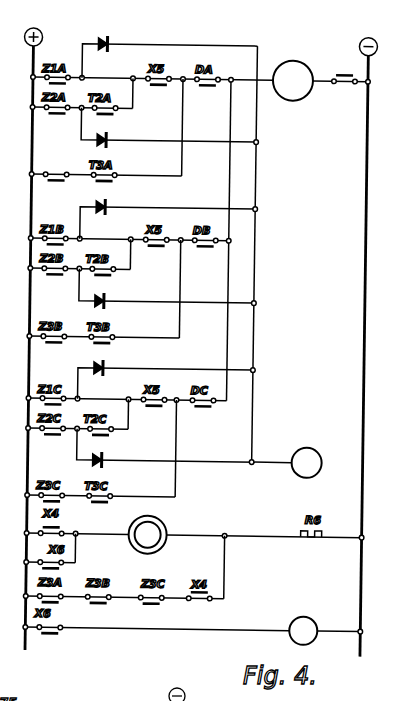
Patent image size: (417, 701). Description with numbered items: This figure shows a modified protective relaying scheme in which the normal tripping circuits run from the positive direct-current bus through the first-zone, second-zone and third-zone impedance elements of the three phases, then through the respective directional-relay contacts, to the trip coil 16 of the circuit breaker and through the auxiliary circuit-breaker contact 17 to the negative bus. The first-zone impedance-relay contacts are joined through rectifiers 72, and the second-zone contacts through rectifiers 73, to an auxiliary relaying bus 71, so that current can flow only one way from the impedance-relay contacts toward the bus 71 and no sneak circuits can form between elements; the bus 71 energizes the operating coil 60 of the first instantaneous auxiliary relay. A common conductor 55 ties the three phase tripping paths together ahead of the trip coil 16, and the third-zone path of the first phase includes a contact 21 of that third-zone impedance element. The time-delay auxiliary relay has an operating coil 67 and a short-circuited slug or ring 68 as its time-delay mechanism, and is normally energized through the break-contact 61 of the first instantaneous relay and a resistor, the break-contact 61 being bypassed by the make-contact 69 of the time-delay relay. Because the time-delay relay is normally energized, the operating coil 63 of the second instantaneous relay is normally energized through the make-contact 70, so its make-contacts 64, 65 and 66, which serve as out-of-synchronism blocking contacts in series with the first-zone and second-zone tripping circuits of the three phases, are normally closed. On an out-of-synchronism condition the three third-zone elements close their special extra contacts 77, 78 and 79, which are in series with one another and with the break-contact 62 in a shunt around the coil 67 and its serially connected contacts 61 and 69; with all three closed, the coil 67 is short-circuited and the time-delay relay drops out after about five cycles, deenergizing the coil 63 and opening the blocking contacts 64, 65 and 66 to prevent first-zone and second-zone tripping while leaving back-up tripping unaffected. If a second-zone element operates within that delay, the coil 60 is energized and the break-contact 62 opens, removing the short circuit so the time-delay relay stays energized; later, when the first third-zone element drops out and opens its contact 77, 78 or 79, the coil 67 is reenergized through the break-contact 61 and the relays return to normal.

The trip coil 16 is at (297, 58).
The auxiliary circuit-breaker contact 17 is at (352, 75).
The contact Z3A 21 is at (66, 182).
The conductor 55 is at (231, 80).
The operating coil 60 is at (316, 447).
The break-contact 61 is at (53, 530).
The break-contact 62 is at (217, 598).
The operating coil 63 is at (311, 615).
The make-contact 64 is at (149, 84).
The make-contact 65 is at (148, 245).
The make-contact 66 is at (148, 405).
The operating coil 67 is at (169, 521).
The short-circuited slug or ring 68 is at (172, 541).
The make-contact 69 is at (71, 563).
The make-contact 70 is at (68, 629).
The auxiliary relaying bus 71 is at (258, 236).
The rectifier 72 is at (111, 45).
The rectifier 73 is at (111, 141).
The extra contact 77 is at (70, 598).
The extra contact 78 is at (116, 598).
The extra contact 79 is at (170, 598).